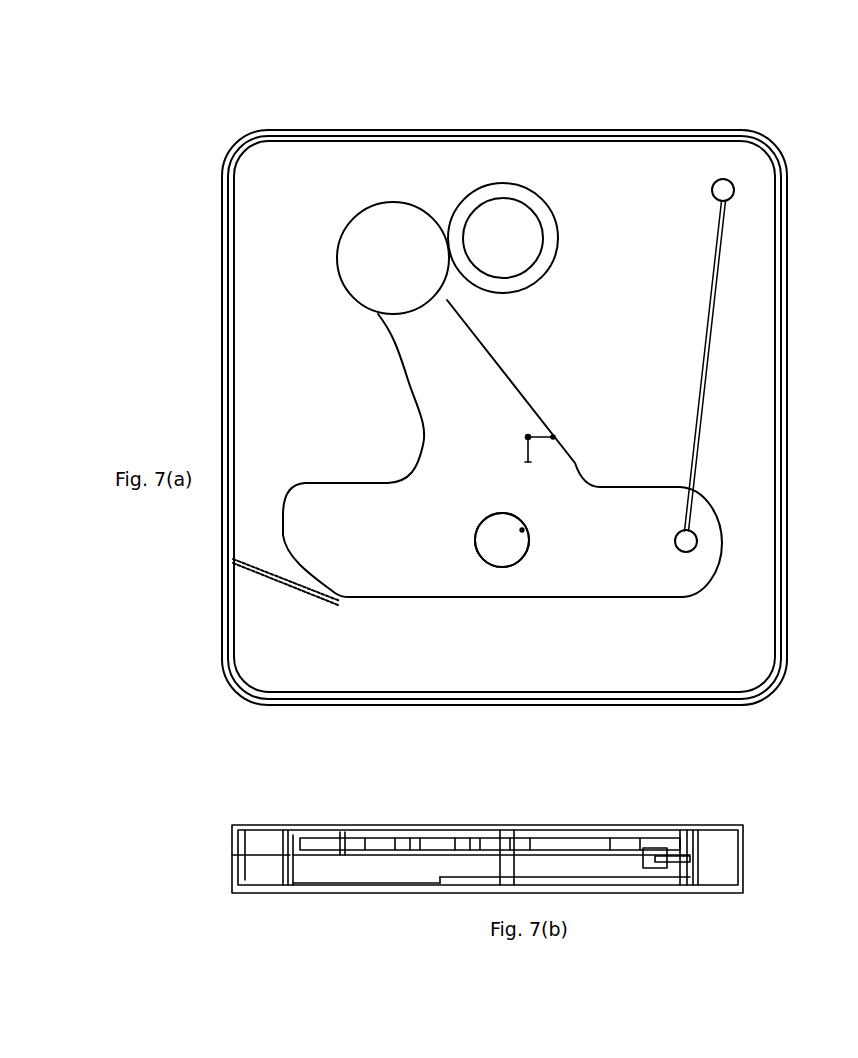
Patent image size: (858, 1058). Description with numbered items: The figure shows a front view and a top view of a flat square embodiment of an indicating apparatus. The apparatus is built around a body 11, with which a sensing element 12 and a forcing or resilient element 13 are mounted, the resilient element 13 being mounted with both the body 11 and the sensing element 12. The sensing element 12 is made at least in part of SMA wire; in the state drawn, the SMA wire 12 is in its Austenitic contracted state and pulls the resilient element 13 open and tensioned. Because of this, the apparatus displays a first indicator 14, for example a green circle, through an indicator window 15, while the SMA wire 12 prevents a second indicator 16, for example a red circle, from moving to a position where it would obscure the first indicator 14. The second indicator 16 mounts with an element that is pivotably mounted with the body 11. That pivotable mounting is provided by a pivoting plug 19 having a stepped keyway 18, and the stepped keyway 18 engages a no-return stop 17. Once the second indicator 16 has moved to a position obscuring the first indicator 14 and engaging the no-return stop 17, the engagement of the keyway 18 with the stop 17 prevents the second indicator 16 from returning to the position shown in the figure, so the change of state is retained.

The body 11 is at (222, 252).
The sensing element 12 is at (713, 337).
The resilient element 13 is at (300, 578).
The first indicator 14 is at (550, 200).
The indicator window 15 is at (503, 198).
The second indicator 16 is at (383, 202).
The no-return stop 17 is at (522, 530).
The stepped keyway 18 is at (512, 513).
The pivoting plug 19 is at (500, 545).